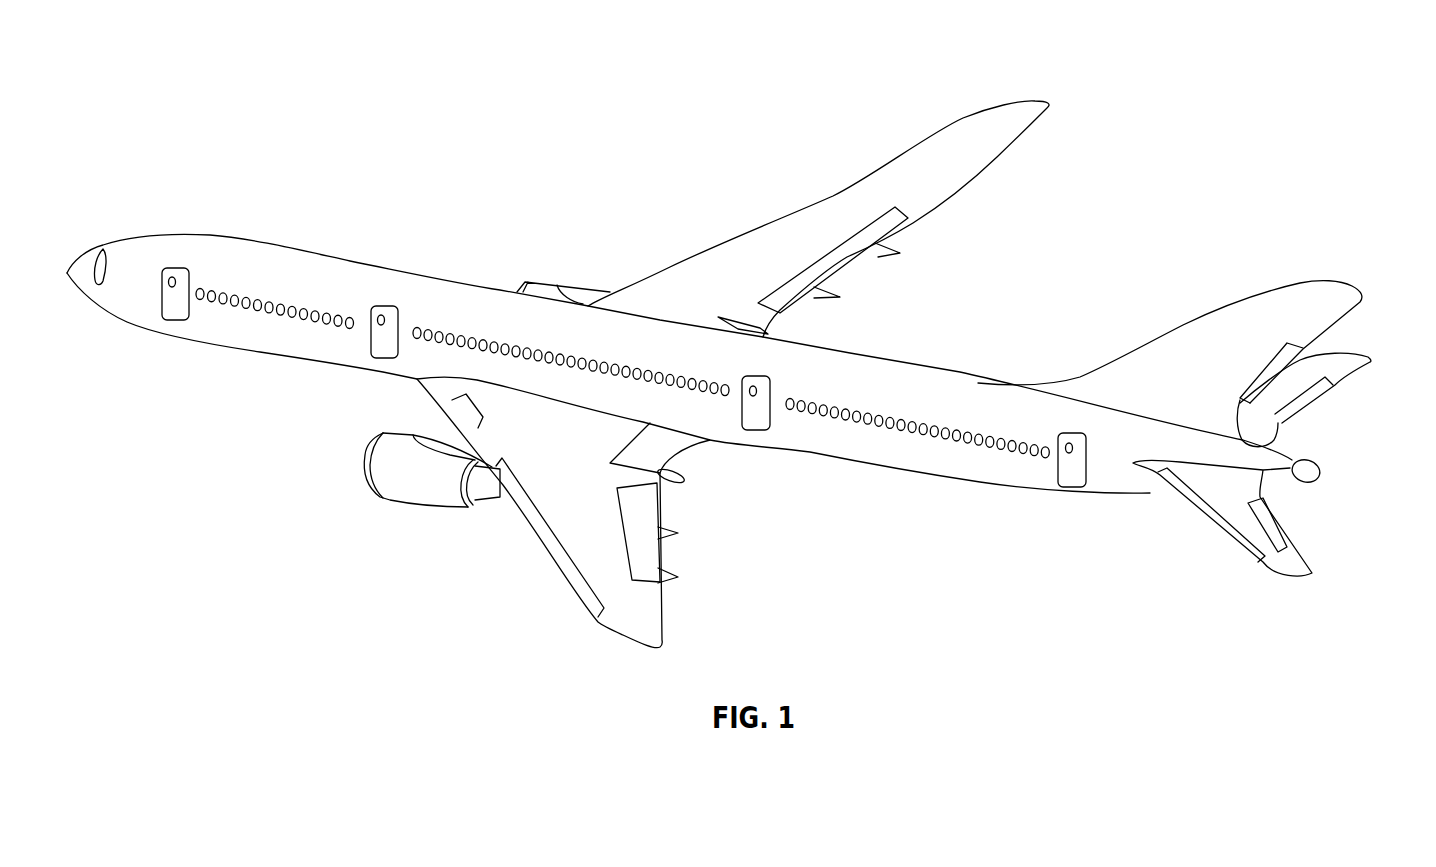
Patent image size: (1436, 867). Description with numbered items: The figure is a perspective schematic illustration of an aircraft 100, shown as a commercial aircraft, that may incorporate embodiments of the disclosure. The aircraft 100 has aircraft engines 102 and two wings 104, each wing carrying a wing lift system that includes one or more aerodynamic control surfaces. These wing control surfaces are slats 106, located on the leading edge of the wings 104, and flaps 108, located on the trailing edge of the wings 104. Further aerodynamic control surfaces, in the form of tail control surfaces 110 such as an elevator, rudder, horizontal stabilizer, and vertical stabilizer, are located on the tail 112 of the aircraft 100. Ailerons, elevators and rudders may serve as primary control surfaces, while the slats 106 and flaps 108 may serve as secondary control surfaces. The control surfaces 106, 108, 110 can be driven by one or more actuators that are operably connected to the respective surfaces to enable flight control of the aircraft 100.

The aircraft 100 is at (298, 145).
The aircraft engines 102 is at (540, 280).
The wings 104 is at (832, 203).
The slats 106 is at (531, 540).
The flaps 108 is at (850, 259).
The tail control surfaces 110 is at (1292, 349).
The tail 112 is at (1138, 296).